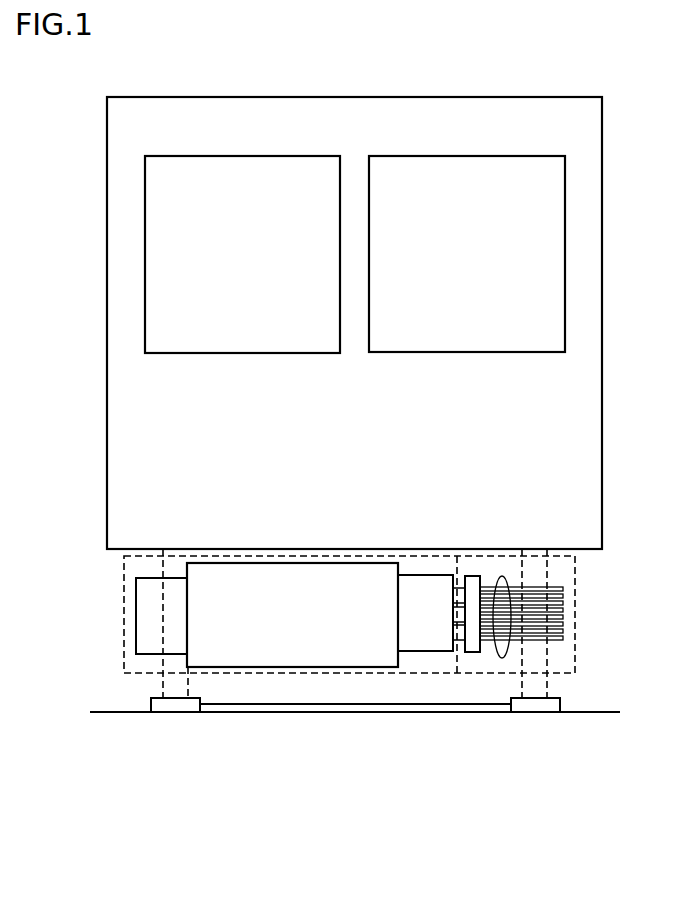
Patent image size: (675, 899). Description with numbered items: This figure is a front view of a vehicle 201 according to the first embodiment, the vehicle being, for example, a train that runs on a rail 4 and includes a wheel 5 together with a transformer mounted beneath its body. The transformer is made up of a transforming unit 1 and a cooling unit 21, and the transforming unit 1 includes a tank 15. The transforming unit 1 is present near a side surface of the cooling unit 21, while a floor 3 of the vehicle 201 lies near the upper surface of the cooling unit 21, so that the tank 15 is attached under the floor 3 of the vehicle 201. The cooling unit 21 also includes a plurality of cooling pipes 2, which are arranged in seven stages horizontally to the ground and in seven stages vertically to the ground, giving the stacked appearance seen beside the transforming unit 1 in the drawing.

The vehicle 201 is at (579, 78).
The floor 3 is at (133, 548).
The rail 4 is at (165, 709).
The transforming unit 1 is at (245, 673).
The tank 15 is at (278, 667).
The cooling unit 21 is at (477, 673).
The cooling pipes 2 is at (500, 658).
The wheel 5 is at (163, 687).